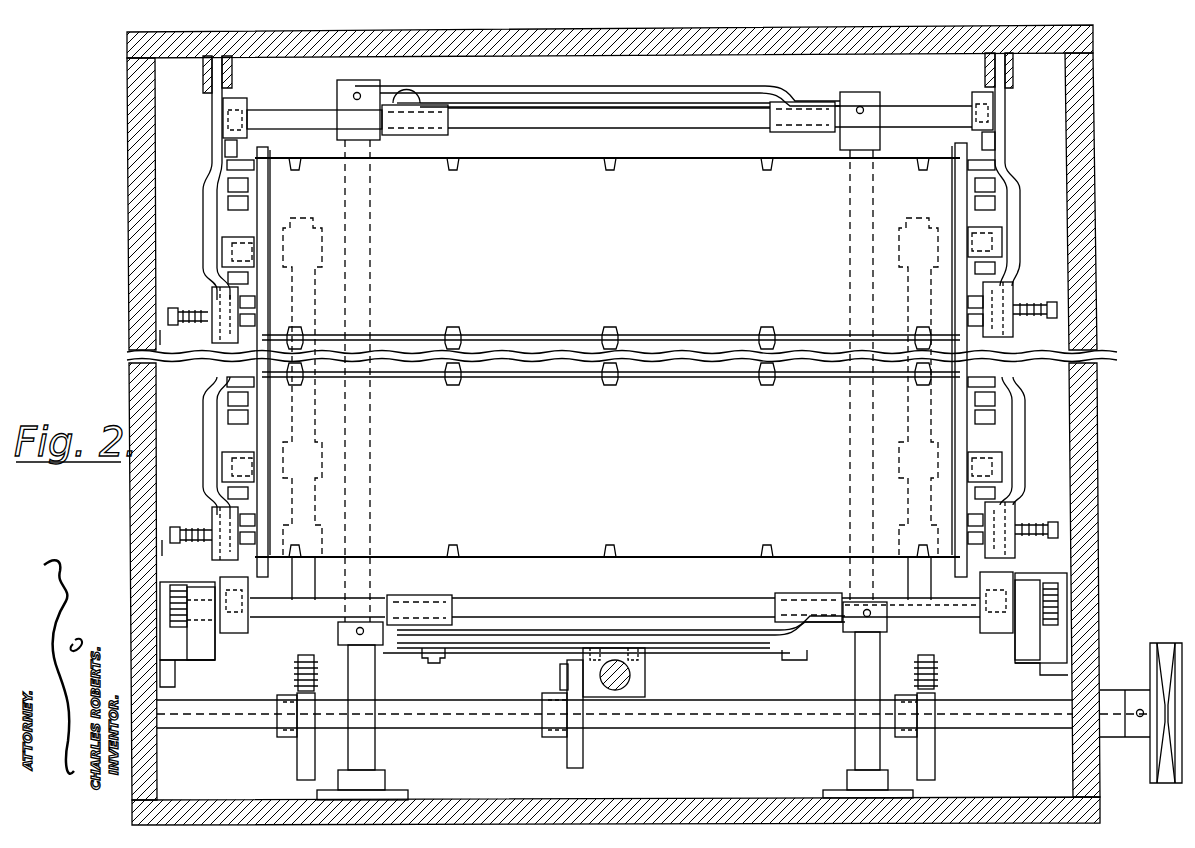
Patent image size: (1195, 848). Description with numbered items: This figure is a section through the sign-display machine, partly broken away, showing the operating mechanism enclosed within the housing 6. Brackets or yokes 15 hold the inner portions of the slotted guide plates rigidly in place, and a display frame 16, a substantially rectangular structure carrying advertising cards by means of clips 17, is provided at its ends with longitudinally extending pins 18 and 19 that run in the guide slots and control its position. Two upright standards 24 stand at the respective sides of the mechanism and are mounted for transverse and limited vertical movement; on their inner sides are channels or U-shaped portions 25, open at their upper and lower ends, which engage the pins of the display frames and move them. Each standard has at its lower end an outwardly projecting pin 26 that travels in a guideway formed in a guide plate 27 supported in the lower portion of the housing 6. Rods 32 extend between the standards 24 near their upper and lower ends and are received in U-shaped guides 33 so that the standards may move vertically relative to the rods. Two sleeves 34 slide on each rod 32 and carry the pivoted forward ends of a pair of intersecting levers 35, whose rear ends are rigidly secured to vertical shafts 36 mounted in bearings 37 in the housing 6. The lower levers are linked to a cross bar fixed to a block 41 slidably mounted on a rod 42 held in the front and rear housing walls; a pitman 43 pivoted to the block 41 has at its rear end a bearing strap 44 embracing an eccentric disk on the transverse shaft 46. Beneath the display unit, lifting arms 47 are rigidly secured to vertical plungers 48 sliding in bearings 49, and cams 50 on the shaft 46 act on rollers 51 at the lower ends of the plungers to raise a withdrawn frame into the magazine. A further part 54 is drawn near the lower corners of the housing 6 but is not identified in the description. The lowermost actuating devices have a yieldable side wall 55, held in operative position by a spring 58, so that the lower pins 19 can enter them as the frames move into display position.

The housing 6 is at (148, 328).
The brackets or yokes 15 is at (220, 246).
The display frame 16 is at (607, 357).
The clips 17 is at (616, 332).
The pins 18 is at (240, 166).
The pins 19 is at (248, 330).
The upright standards 24 is at (205, 423).
The channels or U-shaped portions 25 is at (225, 150).
The pin 26 is at (613, 618).
The guide member or plate 27 is at (200, 662).
The rods 32 is at (272, 122).
The U-shaped guides 33 is at (248, 104).
The sleeves 34 is at (450, 122).
The intersecting levers 35 is at (712, 62).
The vertical shafts 36 is at (372, 298).
The bearings 37 is at (386, 778).
The block 41 is at (650, 690).
The rod 42 is at (650, 672).
The pitman 43 is at (558, 680).
The bearing strap 44 is at (584, 759).
The transverse shaft 46 is at (724, 720).
The lifting arms 47 is at (322, 322).
The vertical plungers 48 is at (610, 409).
The bearings 49 is at (320, 248).
The cams 50 is at (300, 764).
The rollers 51 is at (314, 668).
The worm 54 is at (178, 632).
The yieldable side wall 55 is at (172, 312).
The spring 58 is at (168, 344).